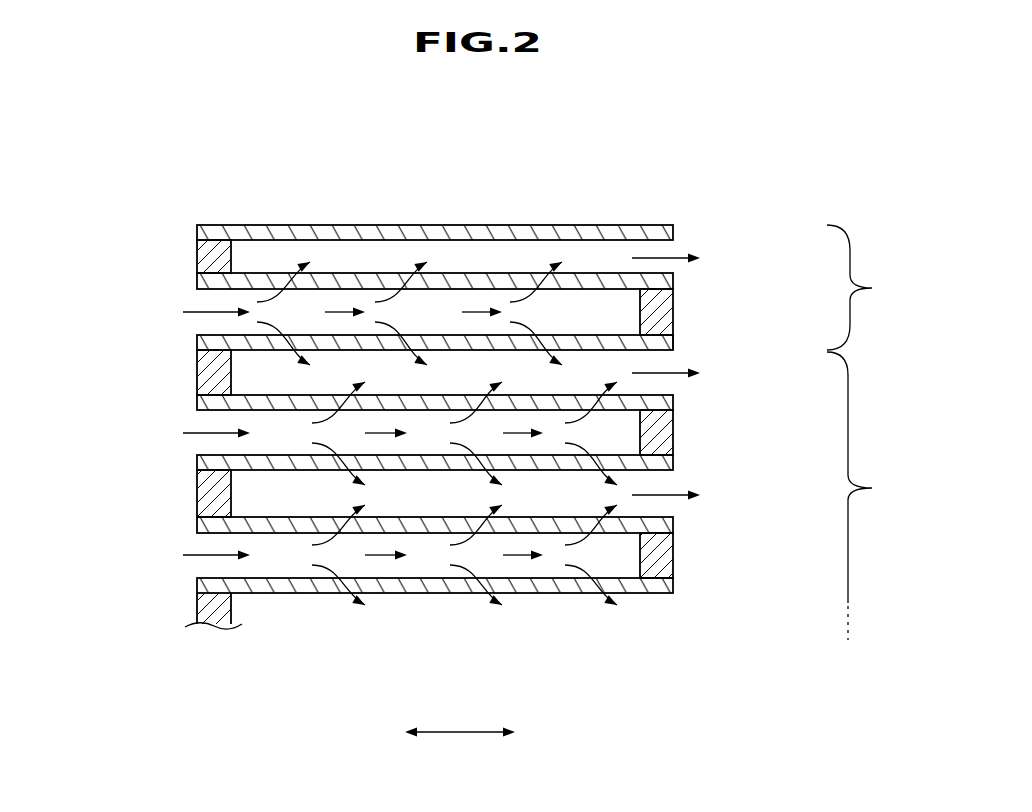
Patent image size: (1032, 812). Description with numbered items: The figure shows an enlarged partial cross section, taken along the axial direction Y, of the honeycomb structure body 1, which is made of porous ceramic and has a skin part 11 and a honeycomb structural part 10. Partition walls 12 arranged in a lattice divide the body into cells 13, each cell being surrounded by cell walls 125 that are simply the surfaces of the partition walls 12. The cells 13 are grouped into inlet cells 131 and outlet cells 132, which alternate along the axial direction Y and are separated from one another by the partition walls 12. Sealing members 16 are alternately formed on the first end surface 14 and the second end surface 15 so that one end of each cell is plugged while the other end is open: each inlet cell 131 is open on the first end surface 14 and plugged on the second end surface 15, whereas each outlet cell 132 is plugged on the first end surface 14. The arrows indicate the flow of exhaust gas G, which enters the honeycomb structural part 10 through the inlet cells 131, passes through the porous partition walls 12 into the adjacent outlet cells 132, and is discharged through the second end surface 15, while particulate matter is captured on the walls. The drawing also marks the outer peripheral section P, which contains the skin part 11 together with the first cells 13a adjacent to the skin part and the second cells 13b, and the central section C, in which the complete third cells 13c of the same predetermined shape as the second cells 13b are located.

The honeycomb structure body 1 is at (705, 156).
The honeycomb structural part 10 is at (162, 536).
The skin part 11 is at (245, 225).
The partition walls 12 is at (447, 345).
The cells 13 is at (478, 465).
The first cells 13a is at (345, 253).
The second cells 13b is at (592, 313).
The third cells 13c is at (398, 447).
The first end surface 14 is at (189, 356).
The second end surface 15 is at (685, 349).
The sealing members 16 is at (213, 262).
The cell walls 125 is at (616, 290).
The inlet cells 131 is at (268, 557).
The outlet cells 132 is at (548, 497).
The exhaust gas G is at (210, 432).
The outer peripheral section P is at (860, 287).
The central section C is at (862, 496).
The axial direction Y is at (460, 751).